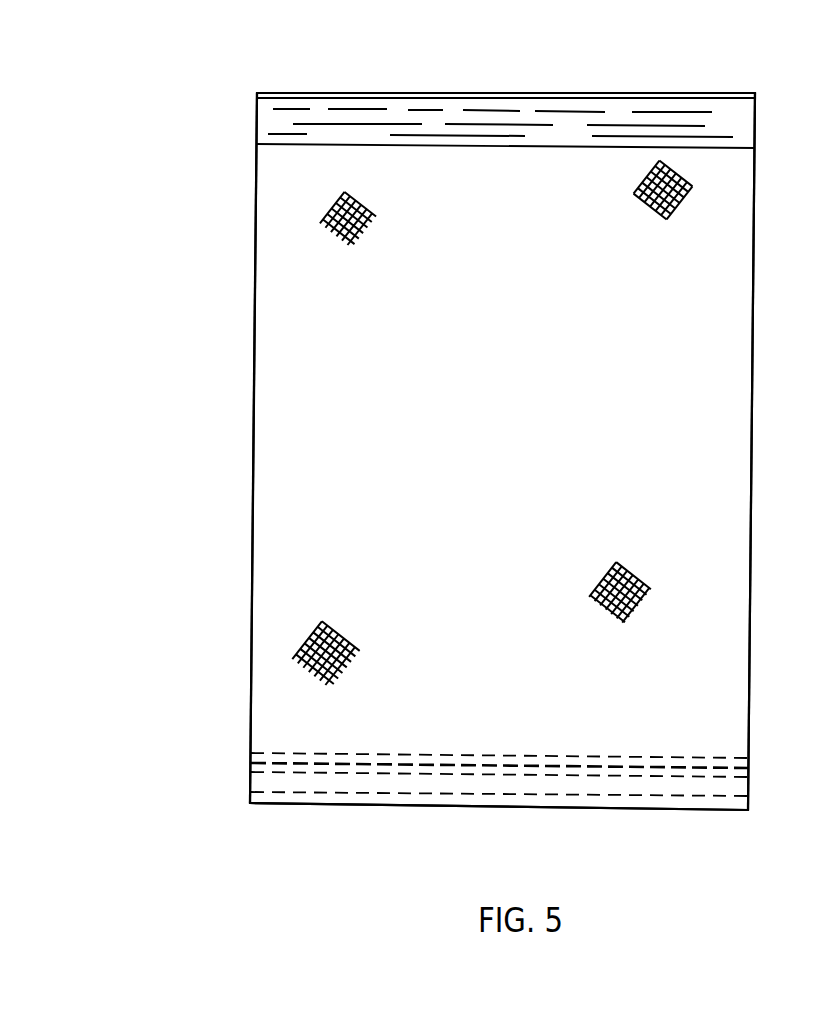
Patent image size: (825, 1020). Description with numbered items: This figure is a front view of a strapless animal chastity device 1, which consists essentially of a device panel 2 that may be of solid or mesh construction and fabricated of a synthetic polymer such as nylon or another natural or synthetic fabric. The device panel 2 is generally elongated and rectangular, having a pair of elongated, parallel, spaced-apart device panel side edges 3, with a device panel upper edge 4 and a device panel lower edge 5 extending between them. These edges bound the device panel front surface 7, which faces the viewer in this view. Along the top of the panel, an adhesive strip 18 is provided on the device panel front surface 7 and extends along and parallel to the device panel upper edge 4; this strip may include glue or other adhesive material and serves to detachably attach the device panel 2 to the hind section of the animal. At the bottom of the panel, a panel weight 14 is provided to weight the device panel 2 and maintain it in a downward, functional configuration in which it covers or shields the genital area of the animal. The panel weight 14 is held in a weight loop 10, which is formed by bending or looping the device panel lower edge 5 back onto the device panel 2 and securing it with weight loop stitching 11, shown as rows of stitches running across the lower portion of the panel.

The device 1 is at (165, 80).
The device panel 2 is at (228, 247).
The device panel side edges 3 is at (248, 485).
The device panel upper edge 4 is at (500, 94).
The device panel lower edge 5 is at (464, 765).
The device panel front surface 7 is at (288, 398).
The weight loop 10 is at (358, 807).
The weight loop stitching 11 is at (379, 760).
The panel weight 14 is at (592, 778).
The adhesive strip 18 is at (392, 113).